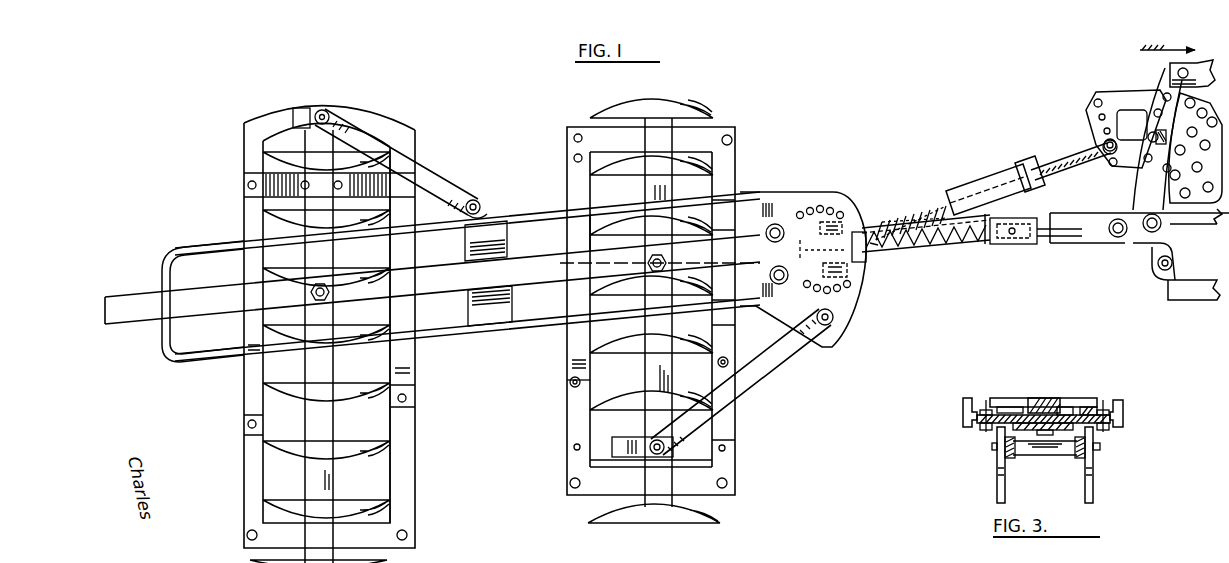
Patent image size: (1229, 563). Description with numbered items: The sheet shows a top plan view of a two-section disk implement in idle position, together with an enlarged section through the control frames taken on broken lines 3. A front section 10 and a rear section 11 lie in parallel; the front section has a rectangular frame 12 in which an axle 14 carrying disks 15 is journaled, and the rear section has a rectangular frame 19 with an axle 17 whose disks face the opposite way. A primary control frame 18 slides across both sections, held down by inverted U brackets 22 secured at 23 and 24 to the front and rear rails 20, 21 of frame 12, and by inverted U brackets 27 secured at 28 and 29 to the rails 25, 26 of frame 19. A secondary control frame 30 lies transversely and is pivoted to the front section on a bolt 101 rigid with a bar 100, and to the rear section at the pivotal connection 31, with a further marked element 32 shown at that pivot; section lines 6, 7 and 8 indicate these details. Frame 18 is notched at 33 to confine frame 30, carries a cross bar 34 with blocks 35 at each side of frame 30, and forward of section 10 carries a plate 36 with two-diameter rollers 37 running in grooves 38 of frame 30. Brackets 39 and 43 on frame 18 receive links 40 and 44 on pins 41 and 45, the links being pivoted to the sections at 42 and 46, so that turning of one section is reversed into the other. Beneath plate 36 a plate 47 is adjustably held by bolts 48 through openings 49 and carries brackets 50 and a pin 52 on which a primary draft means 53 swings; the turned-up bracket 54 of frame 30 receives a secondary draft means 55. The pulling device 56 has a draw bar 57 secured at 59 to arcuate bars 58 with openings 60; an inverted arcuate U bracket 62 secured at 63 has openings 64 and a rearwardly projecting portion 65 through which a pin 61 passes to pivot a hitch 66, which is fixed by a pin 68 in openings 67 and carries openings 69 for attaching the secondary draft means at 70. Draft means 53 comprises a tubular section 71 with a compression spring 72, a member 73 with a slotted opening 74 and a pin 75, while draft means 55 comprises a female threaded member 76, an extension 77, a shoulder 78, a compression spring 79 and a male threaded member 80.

In FIG. 1, the section line 3 is at (833, 345).
In FIG. 1, the section line 6 is at (195, 396).
In FIG. 1, the section line 7 is at (512, 385).
In FIG. 1, the section line 8 is at (550, 243).
In FIG. 1, the front section 10 is at (722, 333).
In FIG. 1, the rear section 11 is at (404, 514).
In FIG. 1, the rectangular frame 12 is at (732, 466).
In FIG. 1, the axle 14 is at (655, 380).
In FIG. 1, the disks 15 is at (595, 513).
In FIG. 1, the axle 17 is at (325, 484).
In FIG. 1, the primary control frame 18 is at (447, 337).
In FIG. 3, the primary control frame 18 is at (1112, 413).
In FIG. 1, the rectangular frame 19 is at (404, 470).
In FIG. 1, the front rail 20 is at (730, 438).
In FIG. 1, the rear rail 21 is at (567, 473).
In FIG. 1, the inverted U bracket 22 is at (730, 190).
In FIG. 1, the securing point 23 is at (730, 135).
In FIG. 1, the securing point 24 is at (577, 153).
In FIG. 1, the front rail 25 is at (404, 432).
In FIG. 1, the rear rail 26 is at (246, 462).
In FIG. 1, the inverted U bracket 27 is at (250, 342).
In FIG. 1, the securing point 28 is at (406, 398).
In FIG. 1, the securing point 29 is at (248, 184).
In FIG. 1, the secondary control frame 30 is at (126, 302).
In FIG. 3, the secondary control frame 30 is at (1050, 398).
In FIG. 1, the pivotal connection 31 is at (330, 292).
In FIG. 1, the hex pivot nut 32 is at (657, 272).
In FIG. 1, the notch 33 is at (168, 292).
In FIG. 1, the cross bar 34 is at (465, 242).
In FIG. 1, the blocks 35 is at (468, 262).
In FIG. 1, the plate 36 is at (803, 212).
In FIG. 3, the plate 36 is at (978, 428).
In FIG. 1, the rollers 37 is at (775, 225).
In FIG. 3, the rollers 37 is at (1010, 398).
In FIG. 1, the grooves 38 is at (725, 262).
In FIG. 3, the grooves 38 is at (1035, 398).
In FIG. 1, the bracket 39 is at (842, 302).
In FIG. 1, the link 40 is at (795, 342).
In FIG. 1, the pin 41 is at (838, 320).
In FIG. 1, the pivotal connection 42 is at (668, 448).
In FIG. 1, the bracket 43 is at (492, 213).
In FIG. 1, the link 44 is at (425, 175).
In FIG. 1, the pin 45 is at (470, 200).
In FIG. 1, the pivotal connection 46 is at (322, 113).
In FIG. 1, the plate 47 is at (778, 252).
In FIG. 3, the plate 47 is at (1043, 436).
In FIG. 1, the bolts 48 is at (820, 207).
In FIG. 3, the bolts 48 is at (985, 408).
In FIG. 1, the openings 49 is at (820, 190).
In FIG. 1, the brackets 50 is at (855, 215).
In FIG. 3, the brackets 50 is at (997, 500).
In FIG. 1, the pin 52 is at (860, 225).
In FIG. 3, the pin 52 is at (1057, 456).
In FIG. 1, the primary draft means 53 is at (1003, 226).
In FIG. 3, the primary draft means 53 is at (1008, 452).
In FIG. 1, the bracket 54 is at (864, 232).
In FIG. 1, the secondary draft means 55 is at (983, 195).
In FIG. 1, the pulling device 56 is at (1190, 300).
In FIG. 1, the draw bar 57 is at (1203, 226).
In FIG. 1, the arcuate bars 58 is at (1165, 292).
In FIG. 1, the securing point 59 is at (1160, 270).
In FIG. 1, the openings 60 is at (1160, 88).
In FIG. 1, the pin 61 is at (1114, 238).
In FIG. 1, the inverted arcuate U bracket 62 is at (1147, 212).
In FIG. 1, the securing point 63 is at (1178, 73).
In FIG. 1, the openings 64 is at (1163, 97).
In FIG. 1, the rearwardly projecting portion 65 is at (1148, 233).
In FIG. 1, the hitch 66 is at (1108, 92).
In FIG. 1, the openings 67 is at (1147, 197).
In FIG. 1, the pin 68 is at (1148, 137).
In FIG. 1, the openings 69 is at (1095, 103).
In FIG. 1, the pivotal attachment 70 is at (1103, 145).
In FIG. 1, the tubular section 71 is at (942, 250).
In FIG. 1, the compression spring 72 is at (968, 250).
In FIG. 1, the member 73 is at (993, 247).
In FIG. 1, the slotted opening 74 is at (1068, 238).
In FIG. 1, the pin 75 is at (1017, 243).
In FIG. 1, the female threaded member 76 is at (1022, 176).
In FIG. 1, the extension 77 is at (932, 207).
In FIG. 1, the shoulder 78 is at (951, 201).
In FIG. 1, the compression spring 79 is at (912, 208).
In FIG. 1, the male threaded member 80 is at (1062, 165).
In FIG. 1, the bar 100 is at (582, 240).
In FIG. 1, the bolt 101 is at (655, 270).